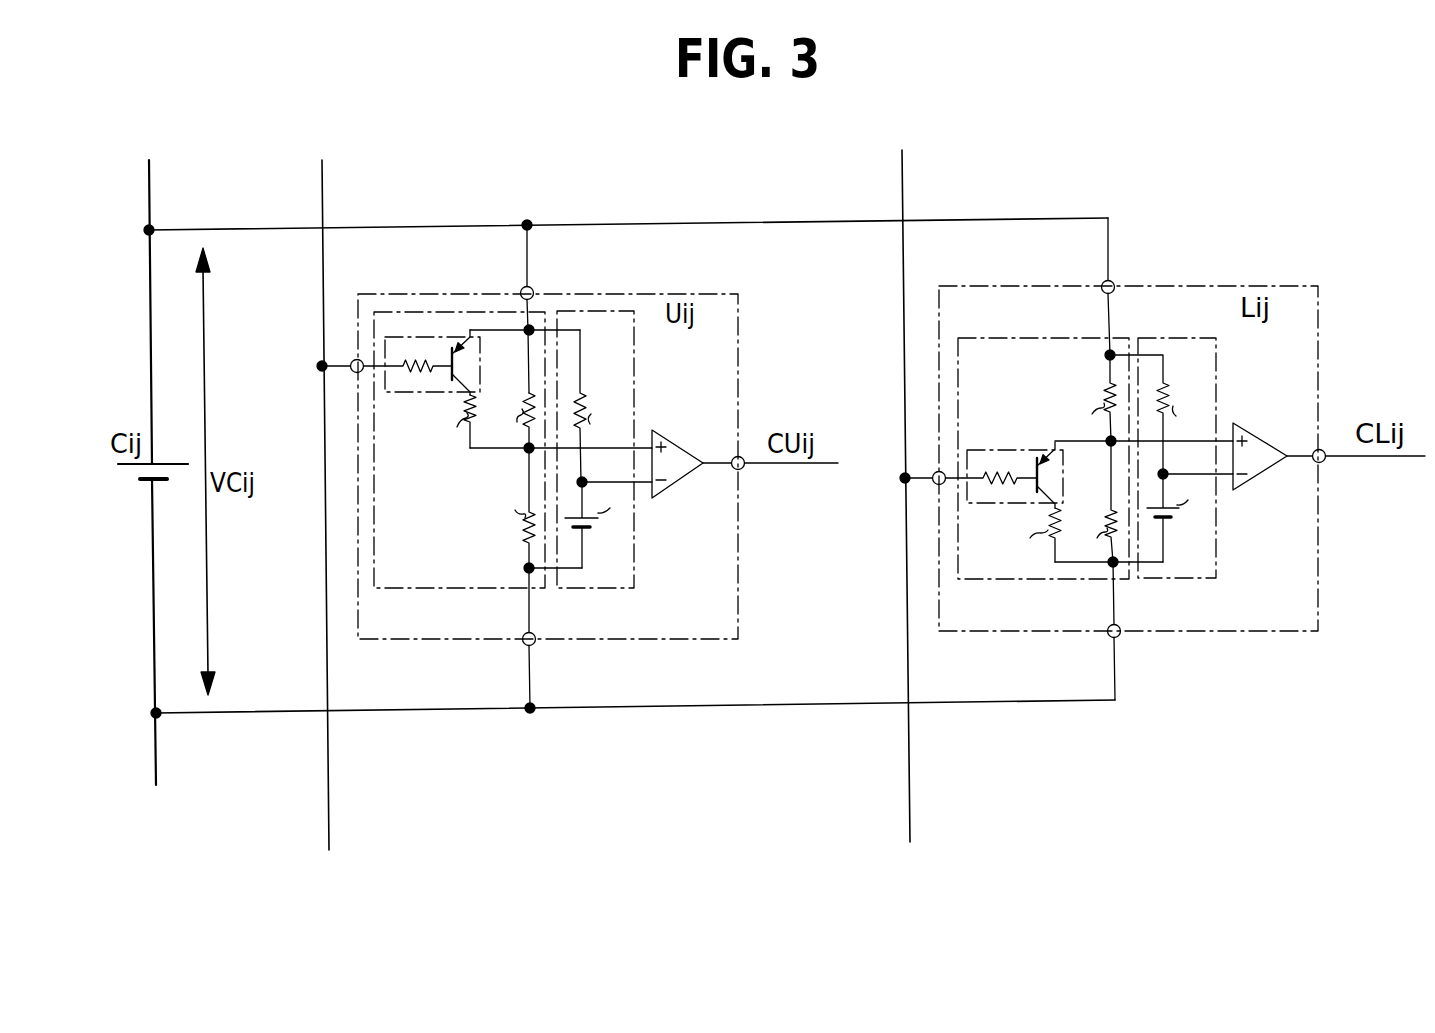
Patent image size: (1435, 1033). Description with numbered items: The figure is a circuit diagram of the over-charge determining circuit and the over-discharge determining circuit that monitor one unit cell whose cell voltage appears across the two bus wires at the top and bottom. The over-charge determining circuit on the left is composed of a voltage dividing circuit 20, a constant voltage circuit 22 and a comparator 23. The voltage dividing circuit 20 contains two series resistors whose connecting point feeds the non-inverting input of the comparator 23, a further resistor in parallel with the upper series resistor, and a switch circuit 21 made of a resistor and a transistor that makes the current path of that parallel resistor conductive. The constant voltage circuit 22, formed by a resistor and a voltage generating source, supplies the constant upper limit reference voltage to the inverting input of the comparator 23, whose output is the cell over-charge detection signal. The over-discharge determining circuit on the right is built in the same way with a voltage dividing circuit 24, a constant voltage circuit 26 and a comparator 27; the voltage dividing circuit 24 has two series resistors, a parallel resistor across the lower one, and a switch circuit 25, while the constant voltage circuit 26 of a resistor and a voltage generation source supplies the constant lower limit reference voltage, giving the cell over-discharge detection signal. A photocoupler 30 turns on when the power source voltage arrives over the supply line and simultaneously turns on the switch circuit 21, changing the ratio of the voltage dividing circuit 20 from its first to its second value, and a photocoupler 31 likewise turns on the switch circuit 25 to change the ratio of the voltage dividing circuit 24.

The voltage dividing circuit 20 is at (508, 475).
The switch circuit 21 is at (401, 392).
The constant voltage circuit 22 is at (618, 588).
The comparator 23 is at (680, 444).
The voltage dividing circuit 24 is at (1090, 484).
The switch circuit 25 is at (985, 450).
The constant voltage circuit 26 is at (1200, 578).
The comparator 27 is at (1257, 436).
The photocoupler 30 is at (329, 526).
The photocoupler 31 is at (912, 517).